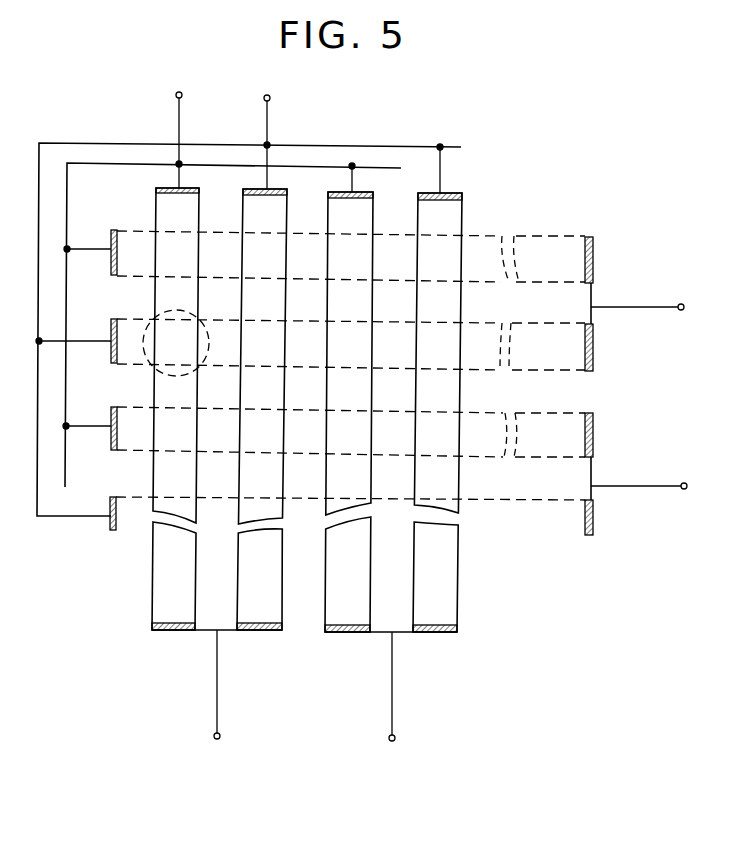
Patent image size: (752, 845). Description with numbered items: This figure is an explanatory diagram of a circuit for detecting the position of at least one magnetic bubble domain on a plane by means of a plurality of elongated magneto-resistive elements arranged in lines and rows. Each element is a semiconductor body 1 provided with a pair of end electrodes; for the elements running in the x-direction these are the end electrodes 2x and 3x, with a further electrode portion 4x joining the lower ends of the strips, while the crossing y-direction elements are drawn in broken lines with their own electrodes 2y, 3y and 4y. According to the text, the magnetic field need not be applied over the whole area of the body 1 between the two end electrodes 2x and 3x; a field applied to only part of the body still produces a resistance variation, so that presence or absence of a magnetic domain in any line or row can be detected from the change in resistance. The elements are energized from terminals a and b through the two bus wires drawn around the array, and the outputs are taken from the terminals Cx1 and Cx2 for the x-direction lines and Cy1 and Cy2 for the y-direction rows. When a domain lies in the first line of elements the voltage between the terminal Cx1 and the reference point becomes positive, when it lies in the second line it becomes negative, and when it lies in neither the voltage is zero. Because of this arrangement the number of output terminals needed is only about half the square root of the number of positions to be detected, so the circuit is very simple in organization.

The semiconductor body 1 is at (159, 211).
The end electrode 2x is at (156, 189).
The end electrode 3x is at (243, 190).
The x-direction electrode connecting portion 4x is at (207, 633).
The first y-direction electrode 2y is at (111, 258).
The second y-direction electrode 3y is at (111, 347).
The y-direction electrode connecting portion 4y is at (593, 256).
The terminal a is at (179, 129).
The terminal b is at (268, 130).
The output terminal Cx1 is at (217, 696).
The x output terminal 2 Cx2 is at (397, 700).
The y output terminal 1 Cy1 is at (659, 309).
The y output terminal 2 Cy2 is at (660, 488).